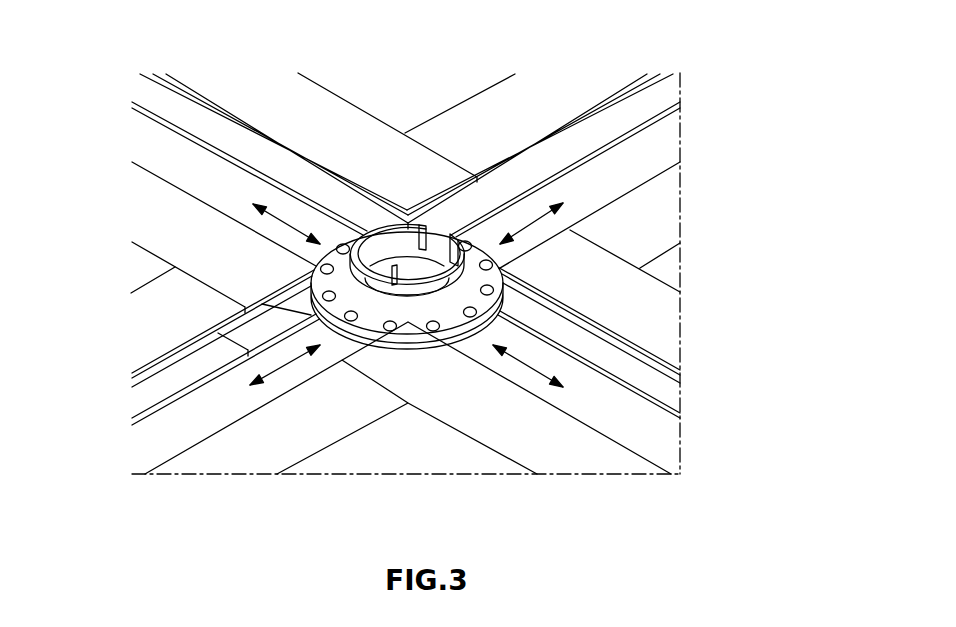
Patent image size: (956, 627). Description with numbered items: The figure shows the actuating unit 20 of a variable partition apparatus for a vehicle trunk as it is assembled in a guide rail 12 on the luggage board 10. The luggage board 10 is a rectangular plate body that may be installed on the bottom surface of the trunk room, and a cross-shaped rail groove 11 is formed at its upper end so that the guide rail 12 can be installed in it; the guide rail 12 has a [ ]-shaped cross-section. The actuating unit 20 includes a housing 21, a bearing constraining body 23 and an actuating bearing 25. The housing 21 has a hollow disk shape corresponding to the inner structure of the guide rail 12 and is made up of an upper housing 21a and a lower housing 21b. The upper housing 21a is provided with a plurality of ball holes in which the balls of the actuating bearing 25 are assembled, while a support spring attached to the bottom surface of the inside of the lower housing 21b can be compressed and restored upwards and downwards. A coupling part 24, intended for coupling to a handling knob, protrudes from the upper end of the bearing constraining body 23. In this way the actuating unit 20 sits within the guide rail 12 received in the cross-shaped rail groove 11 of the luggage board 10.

The luggage board 10 is at (378, 452).
The rail groove 11 is at (648, 441).
The guide rail 12 is at (660, 213).
The actuating unit 20 is at (452, 205).
The housing 21 is at (729, 258).
The upper housing 21a is at (543, 243).
The lower housing 21b is at (542, 337).
The bearing constraining body 23 is at (425, 277).
The coupling part 24 is at (422, 225).
The actuating bearing 25 is at (315, 259).